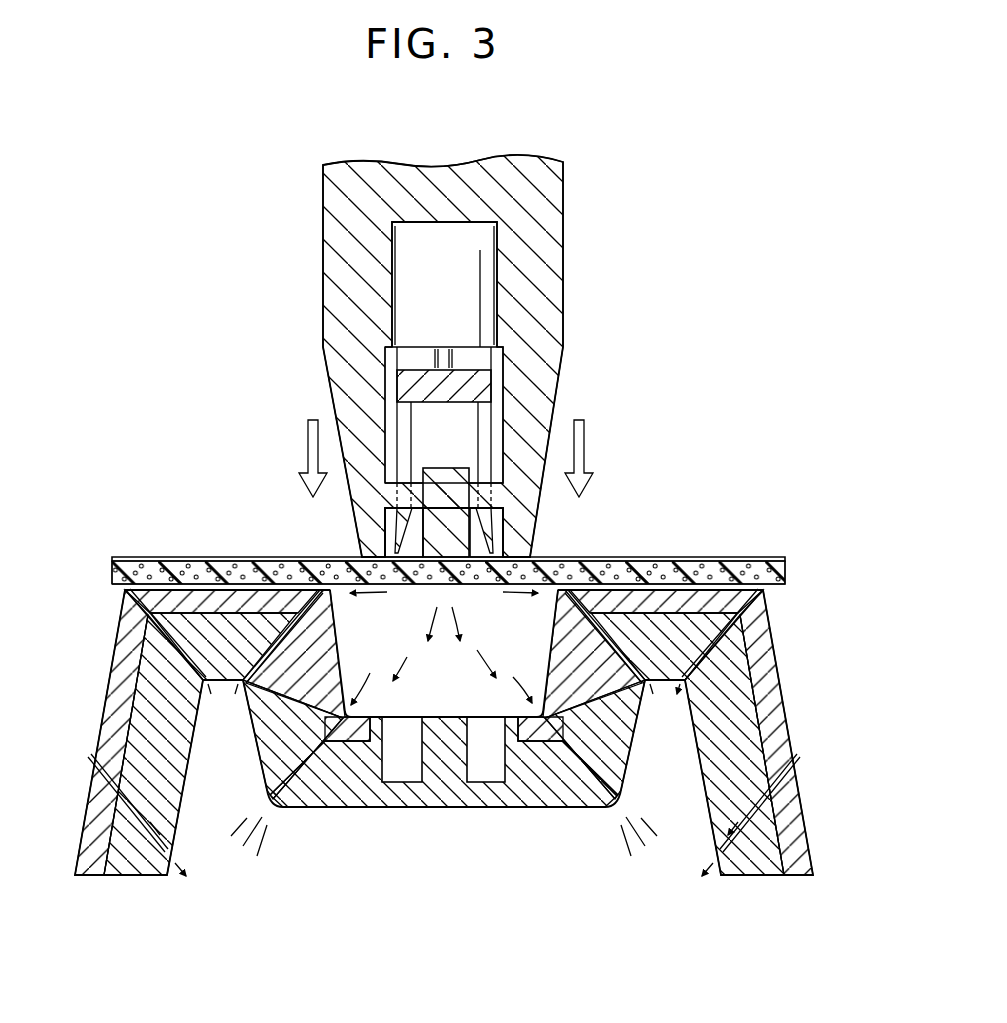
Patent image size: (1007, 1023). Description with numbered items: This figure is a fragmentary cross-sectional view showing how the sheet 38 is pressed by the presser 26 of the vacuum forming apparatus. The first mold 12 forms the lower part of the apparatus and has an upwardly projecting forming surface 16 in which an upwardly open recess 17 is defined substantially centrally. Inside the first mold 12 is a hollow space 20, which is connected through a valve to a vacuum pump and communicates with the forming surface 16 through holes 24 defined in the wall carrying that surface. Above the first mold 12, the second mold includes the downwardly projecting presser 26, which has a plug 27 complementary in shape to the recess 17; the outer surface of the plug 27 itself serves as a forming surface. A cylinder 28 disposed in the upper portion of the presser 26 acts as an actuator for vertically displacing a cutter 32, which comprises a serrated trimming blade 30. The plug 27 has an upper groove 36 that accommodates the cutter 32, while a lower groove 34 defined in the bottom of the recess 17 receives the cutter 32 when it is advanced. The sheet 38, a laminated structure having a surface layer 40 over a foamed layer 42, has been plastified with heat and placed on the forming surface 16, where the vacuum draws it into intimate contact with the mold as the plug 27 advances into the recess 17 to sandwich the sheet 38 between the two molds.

The first mold 12 is at (478, 732).
The forming surface 16 is at (458, 732).
The recess 17 is at (455, 693).
The hollow space 20 is at (448, 858).
The holes 24 is at (122, 589).
The presser 26 is at (303, 312).
The plug 27 is at (355, 553).
The cylinder 28 is at (462, 281).
The trimming blade 30 is at (487, 463).
The cutter 32 is at (480, 385).
The lower groove 34 is at (418, 759).
The upper groove 36 is at (388, 534).
The sheet 38 is at (490, 550).
The surface layer 40 is at (756, 558).
The foamed layer 42 is at (782, 575).